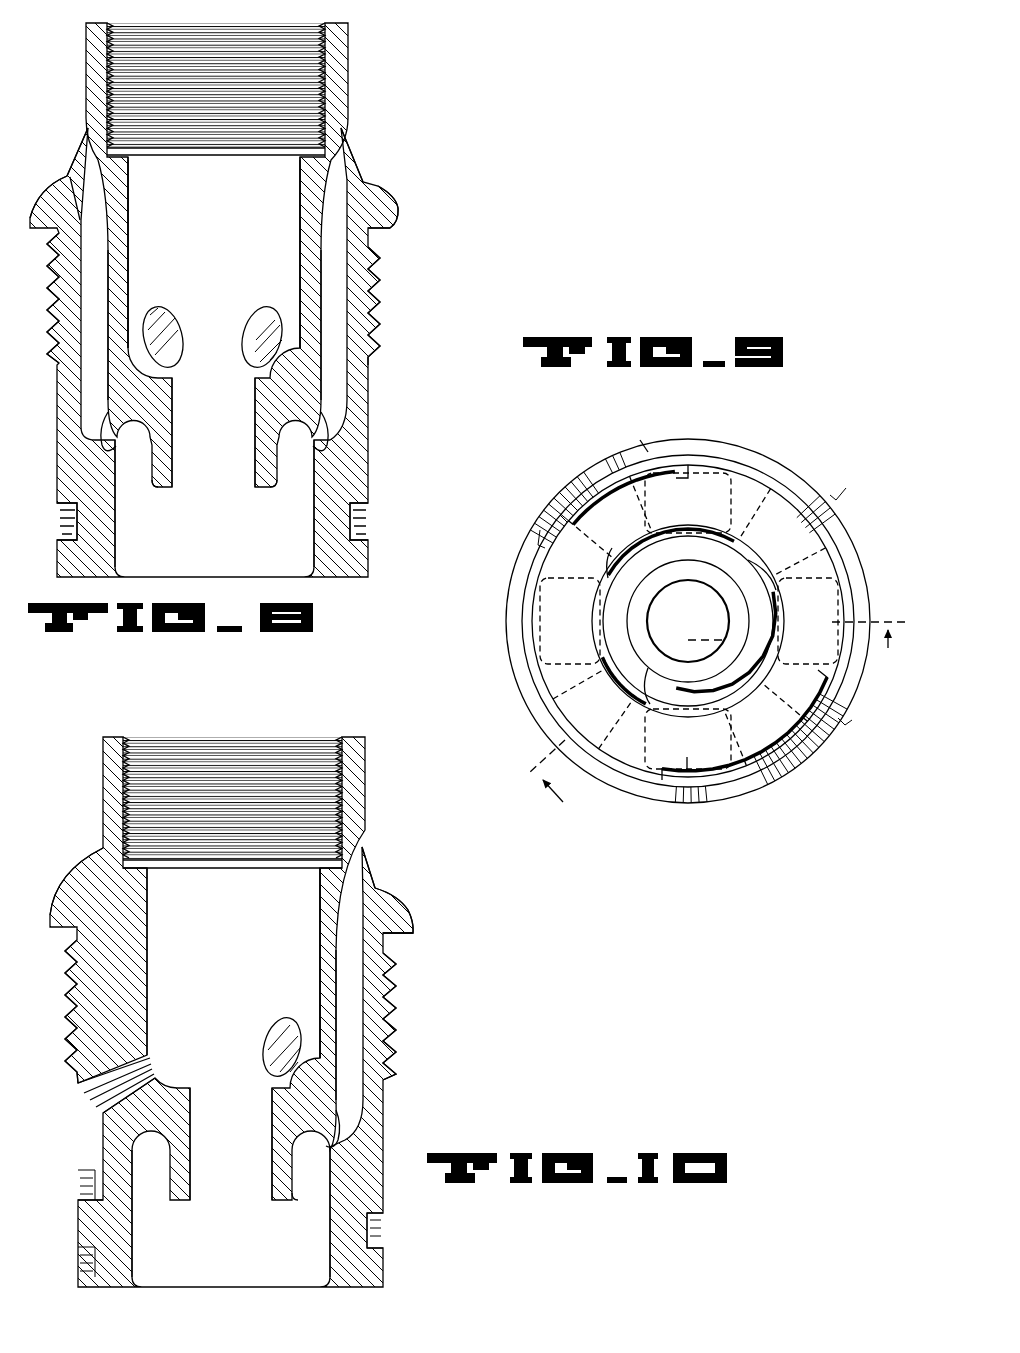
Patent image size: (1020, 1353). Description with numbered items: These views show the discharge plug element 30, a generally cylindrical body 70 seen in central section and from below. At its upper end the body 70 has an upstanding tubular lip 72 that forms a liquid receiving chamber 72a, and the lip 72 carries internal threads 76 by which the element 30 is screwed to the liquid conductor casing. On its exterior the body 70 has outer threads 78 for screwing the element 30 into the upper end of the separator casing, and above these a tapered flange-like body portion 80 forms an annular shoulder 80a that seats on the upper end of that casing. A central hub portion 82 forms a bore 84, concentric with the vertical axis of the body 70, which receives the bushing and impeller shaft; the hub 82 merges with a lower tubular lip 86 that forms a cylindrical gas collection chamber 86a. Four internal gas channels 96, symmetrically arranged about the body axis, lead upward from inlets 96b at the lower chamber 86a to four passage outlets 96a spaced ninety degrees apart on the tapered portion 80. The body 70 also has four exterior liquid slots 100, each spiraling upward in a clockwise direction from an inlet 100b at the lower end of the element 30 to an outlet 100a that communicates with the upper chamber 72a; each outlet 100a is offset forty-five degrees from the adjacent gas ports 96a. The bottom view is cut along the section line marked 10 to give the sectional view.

In FIG. 9, the section line 10- 10 is at (706, 697).
In FIG. 8, the discharge plug element 30 is at (390, 95).
In FIG. 9, the discharge plug element 30 is at (690, 832).
In FIG. 8, the body 70 is at (52, 428).
In FIG. 9, the body 70 is at (757, 470).
In FIG. 10, the body 70 is at (392, 1108).
In FIG. 8, the upstanding tubular lip 72 is at (86, 50).
In FIG. 10, the upstanding tubular lip 72 is at (103, 786).
In FIG. 8, the liquid receiving chamber 72a is at (216, 197).
In FIG. 10, the liquid receiving chamber 72a is at (241, 947).
In FIG. 8, the internal threads 76 is at (235, 40).
In FIG. 10, the internal threads 76 is at (232, 760).
In FIG. 8, the outer threads 78 is at (378, 302).
In FIG. 9, the outer threads 78 is at (820, 520).
In FIG. 10, the outer threads 78 is at (396, 1022).
In FIG. 8, the tapered flange-like body portion 80 is at (396, 212).
In FIG. 9, the tapered flange-like body portion 80 is at (597, 458).
In FIG. 10, the tapered flange-like body portion 80 is at (413, 918).
In FIG. 8, the annular shoulder 80a is at (382, 229).
In FIG. 9, the annular shoulder 80a is at (643, 450).
In FIG. 10, the annular shoulder 80a is at (413, 936).
In FIG. 8, the central hub portion 82 is at (268, 490).
In FIG. 9, the central hub portion 82 is at (648, 650).
In FIG. 10, the central hub portion 82 is at (292, 1195).
In FIG. 8, the bore 84 is at (222, 442).
In FIG. 9, the bore 84 is at (655, 608).
In FIG. 10, the bore 84 is at (239, 1148).
In FIG. 8, the tubular lip 86 is at (335, 470).
In FIG. 9, the tubular lip 86 is at (628, 745).
In FIG. 10, the tubular lip 86 is at (373, 1195).
In FIG. 8, the gas collection chamber 86a is at (228, 562).
In FIG. 9, the gas collection chamber 86a is at (765, 705).
In FIG. 10, the gas collection chamber 86a is at (238, 1250).
In FIG. 8, the internal gas channels 96 is at (118, 262).
In FIG. 10, the internal gas channels 96 is at (338, 985).
In FIG. 8, the passage outlets 96a is at (82, 170).
In FIG. 9, the passage outlets 96a is at (706, 455).
In FIG. 10, the passage outlets 96a is at (370, 886).
In FIG. 8, the inlets 96b is at (122, 445).
In FIG. 9, the inlets 96b is at (705, 522).
In FIG. 10, the inlets 96b is at (340, 1134).
In FIG. 8, the exterior liquid channels 100 is at (65, 522).
In FIG. 9, the exterior liquid channels 100 is at (563, 492).
In FIG. 10, the exterior liquid channels 100 is at (88, 1155).
In FIG. 8, the outlet 100a is at (258, 318).
In FIG. 10, the outlet 100a is at (233, 1046).
In FIG. 9, the inlet 100b is at (566, 510).
In FIG. 10, the inlet 100b is at (95, 1283).